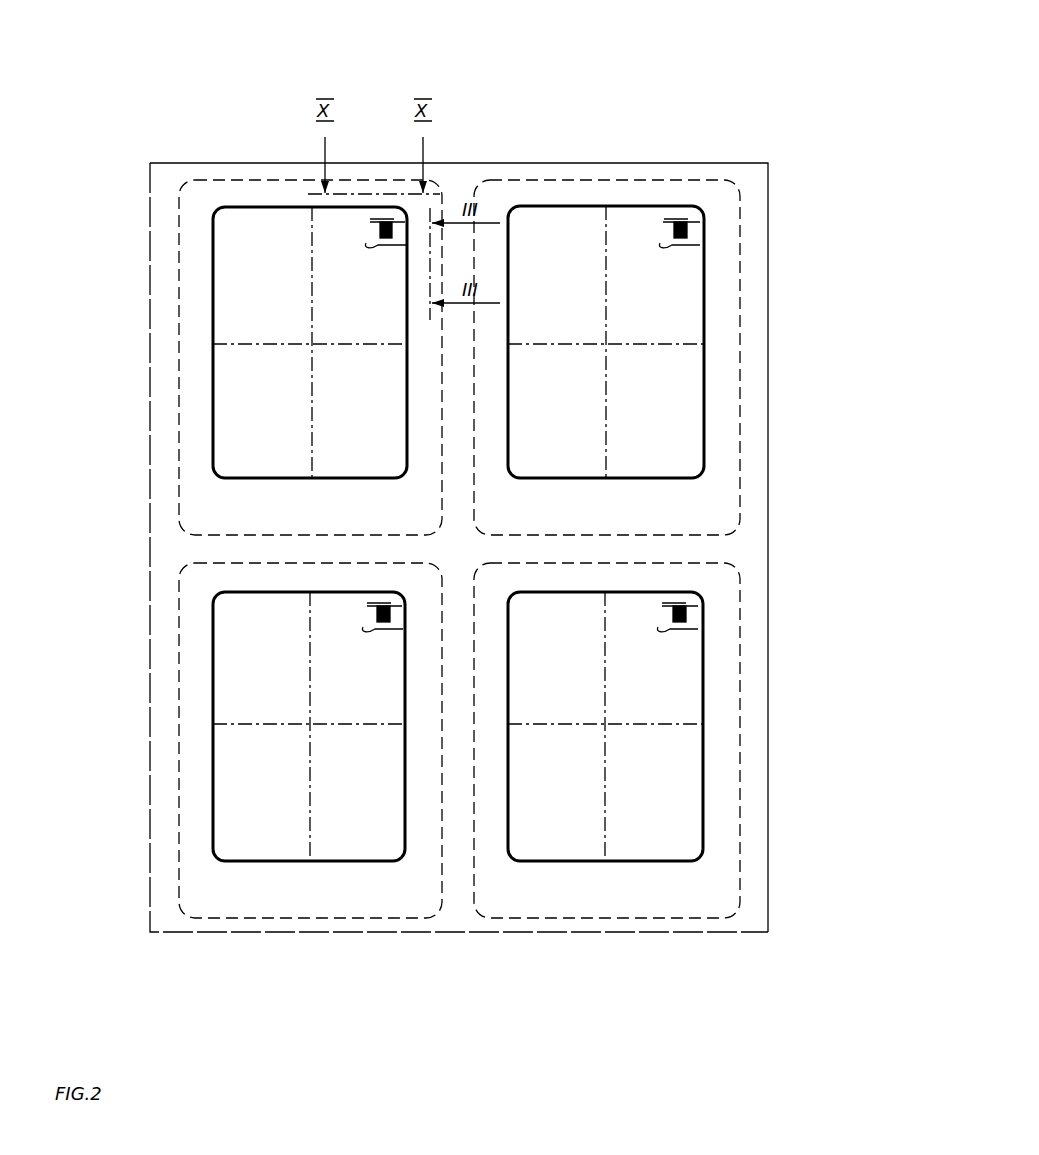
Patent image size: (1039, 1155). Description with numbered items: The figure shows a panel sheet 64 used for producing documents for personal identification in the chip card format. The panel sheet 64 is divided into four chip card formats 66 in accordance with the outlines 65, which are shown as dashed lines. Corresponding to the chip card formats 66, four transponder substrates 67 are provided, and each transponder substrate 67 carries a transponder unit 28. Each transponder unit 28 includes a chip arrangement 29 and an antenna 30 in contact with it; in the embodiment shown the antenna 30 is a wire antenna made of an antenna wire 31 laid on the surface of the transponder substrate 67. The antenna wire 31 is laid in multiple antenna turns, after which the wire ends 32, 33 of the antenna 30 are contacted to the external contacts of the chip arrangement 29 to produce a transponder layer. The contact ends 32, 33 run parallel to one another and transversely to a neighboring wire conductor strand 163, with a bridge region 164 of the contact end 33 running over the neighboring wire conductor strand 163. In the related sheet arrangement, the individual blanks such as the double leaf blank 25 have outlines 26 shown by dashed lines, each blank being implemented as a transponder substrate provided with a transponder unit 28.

The double leaf blank 25 is at (720, 727).
The outline 26 is at (740, 483).
The transponder unit 28 is at (243, 240).
The chip arrangement 29 is at (372, 231).
The antenna 30 is at (252, 207).
The antenna wire 31 is at (282, 207).
The wire end 32 is at (400, 246).
The wire end 33 is at (381, 218).
The panel sheet 64 is at (662, 118).
The outline 65 is at (740, 337).
The chip card format 66 is at (753, 407).
The transponder substrate 67 is at (366, 411).
The wire conductor strand 163 is at (710, 253).
The bridge region 164 is at (690, 213).